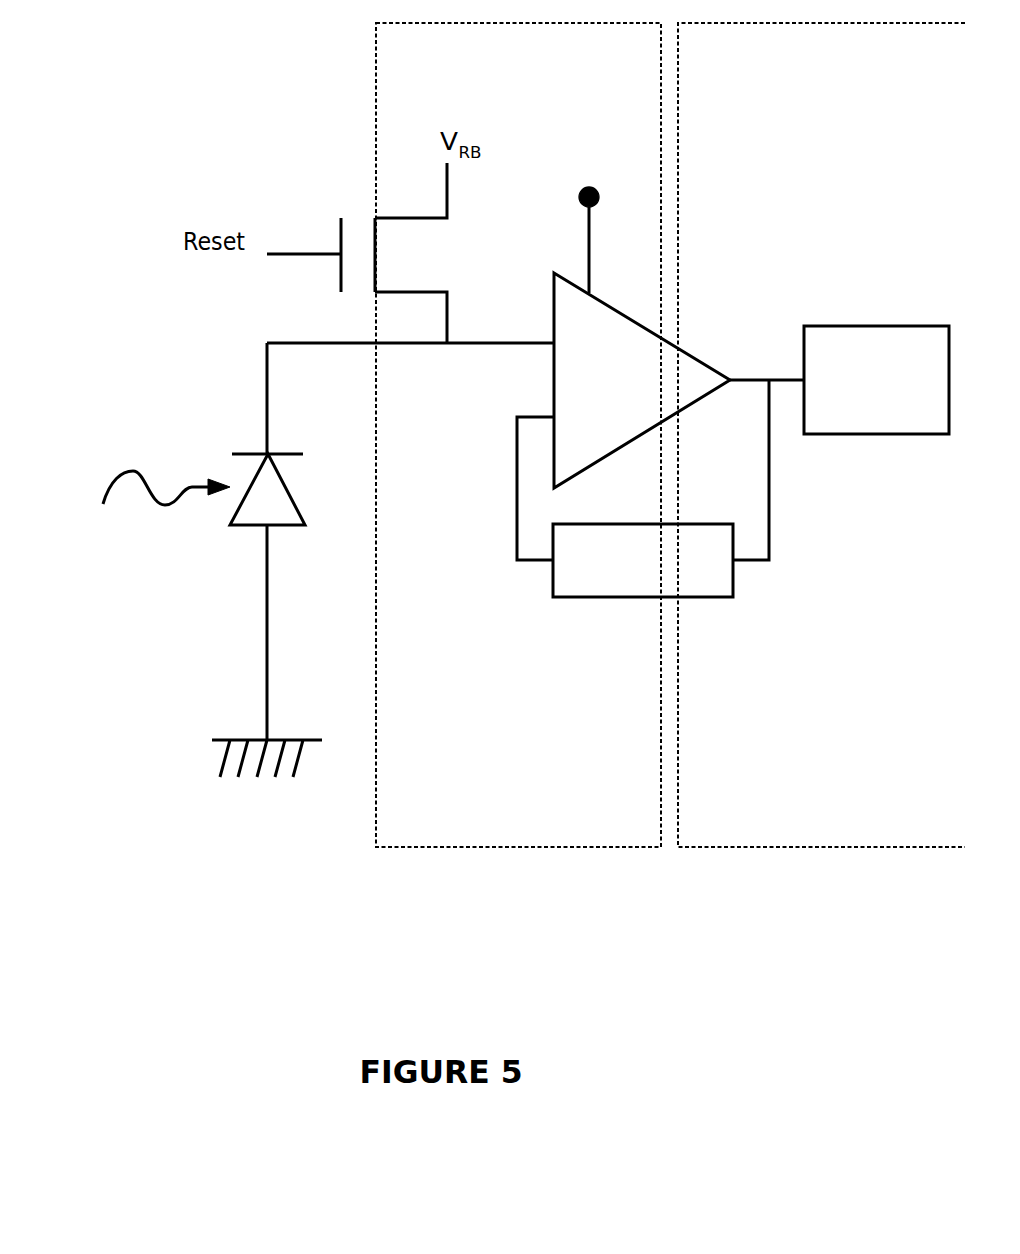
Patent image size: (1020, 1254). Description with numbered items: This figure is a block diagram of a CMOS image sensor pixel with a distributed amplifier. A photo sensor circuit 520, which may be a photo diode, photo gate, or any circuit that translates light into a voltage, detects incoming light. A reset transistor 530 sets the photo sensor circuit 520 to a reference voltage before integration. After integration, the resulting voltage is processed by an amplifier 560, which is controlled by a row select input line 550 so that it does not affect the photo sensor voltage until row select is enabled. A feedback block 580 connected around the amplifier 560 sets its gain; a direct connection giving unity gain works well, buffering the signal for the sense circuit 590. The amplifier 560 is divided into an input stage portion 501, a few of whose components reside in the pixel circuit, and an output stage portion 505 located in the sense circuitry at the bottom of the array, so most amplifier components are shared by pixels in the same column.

The input stage portion 501 is at (518, 435).
The output stage portion 505 is at (821, 435).
The photo sensor circuit 520 is at (244, 492).
The reset transistor 530 is at (372, 210).
The row select input line 550 is at (616, 188).
The amplifier 560 is at (642, 380).
The feedback block 580 is at (643, 560).
The sense circuit 590 is at (876, 380).